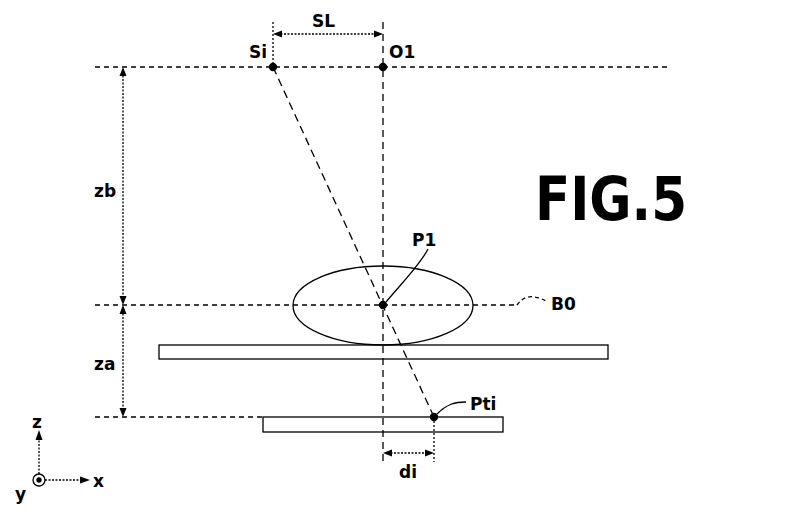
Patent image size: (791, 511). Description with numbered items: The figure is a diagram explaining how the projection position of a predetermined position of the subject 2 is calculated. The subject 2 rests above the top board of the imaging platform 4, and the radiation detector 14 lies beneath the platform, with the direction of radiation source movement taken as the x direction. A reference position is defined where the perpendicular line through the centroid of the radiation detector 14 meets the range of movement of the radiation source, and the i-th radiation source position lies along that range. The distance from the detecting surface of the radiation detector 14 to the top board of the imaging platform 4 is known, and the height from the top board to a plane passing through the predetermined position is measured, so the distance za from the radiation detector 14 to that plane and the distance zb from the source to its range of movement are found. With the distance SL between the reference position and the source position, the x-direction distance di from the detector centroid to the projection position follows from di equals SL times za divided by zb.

The subject 2 is at (313, 279).
The imaging platform 4 is at (608, 352).
The radiation detector 14 is at (503, 425).